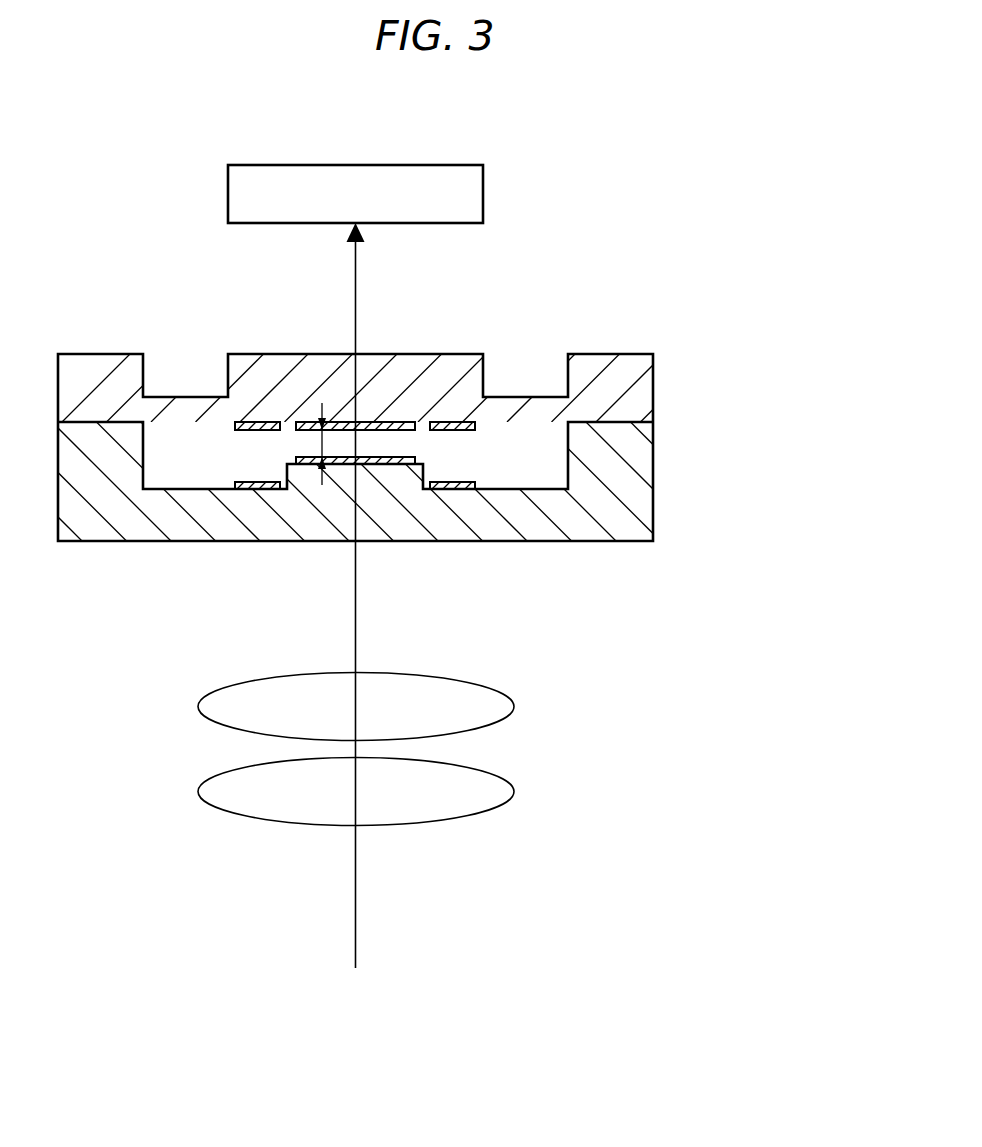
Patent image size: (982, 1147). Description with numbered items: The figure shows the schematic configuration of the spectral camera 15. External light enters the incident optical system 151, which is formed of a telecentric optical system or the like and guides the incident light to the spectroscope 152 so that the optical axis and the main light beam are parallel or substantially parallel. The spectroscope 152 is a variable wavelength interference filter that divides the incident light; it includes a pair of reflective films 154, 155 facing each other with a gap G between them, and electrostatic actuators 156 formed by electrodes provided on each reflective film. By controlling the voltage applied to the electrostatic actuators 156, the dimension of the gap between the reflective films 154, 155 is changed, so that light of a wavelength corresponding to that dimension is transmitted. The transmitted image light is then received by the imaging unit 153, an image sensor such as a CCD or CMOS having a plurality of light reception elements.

The spectral camera 15 is at (727, 148).
The incident optical system 151 is at (544, 746).
The spectroscope 152 is at (653, 463).
The imaging unit 153 is at (483, 195).
The reflective film 154 is at (403, 460).
The reflective film 155 is at (395, 426).
The electrostatic actuator 156 is at (236, 427).